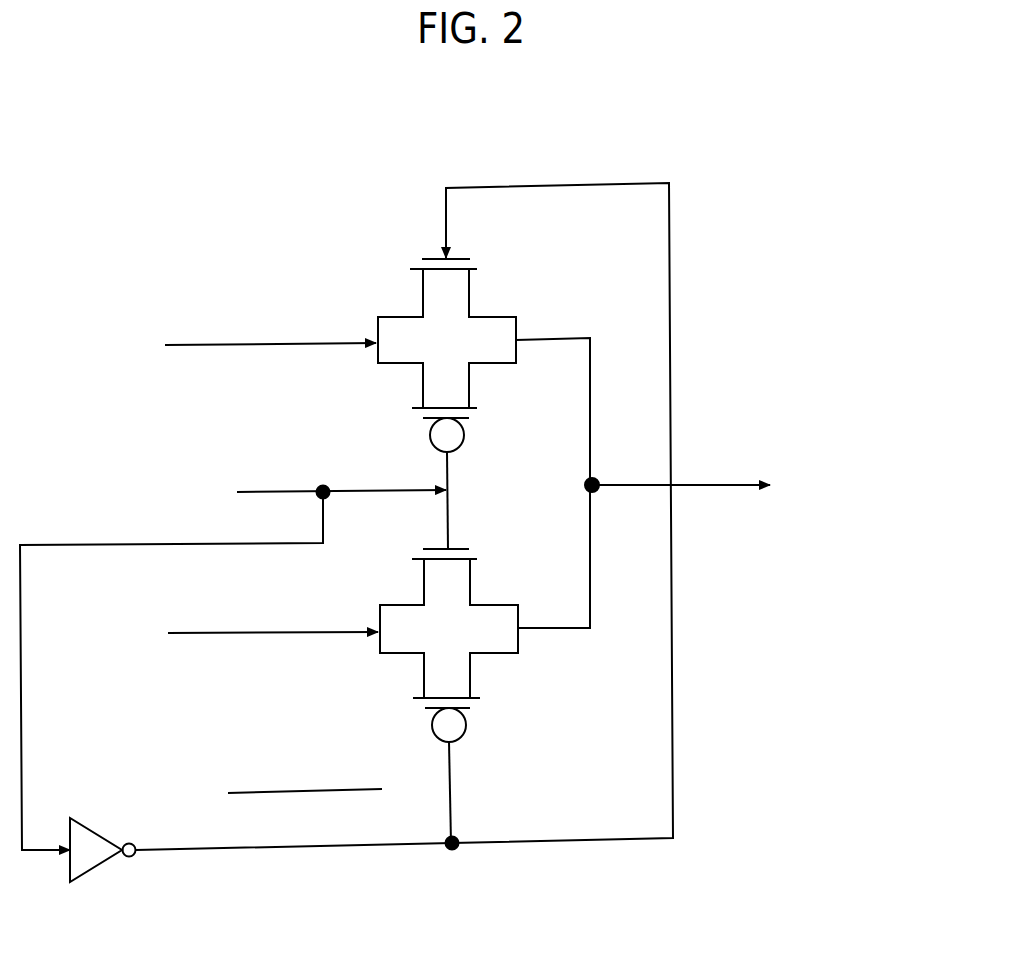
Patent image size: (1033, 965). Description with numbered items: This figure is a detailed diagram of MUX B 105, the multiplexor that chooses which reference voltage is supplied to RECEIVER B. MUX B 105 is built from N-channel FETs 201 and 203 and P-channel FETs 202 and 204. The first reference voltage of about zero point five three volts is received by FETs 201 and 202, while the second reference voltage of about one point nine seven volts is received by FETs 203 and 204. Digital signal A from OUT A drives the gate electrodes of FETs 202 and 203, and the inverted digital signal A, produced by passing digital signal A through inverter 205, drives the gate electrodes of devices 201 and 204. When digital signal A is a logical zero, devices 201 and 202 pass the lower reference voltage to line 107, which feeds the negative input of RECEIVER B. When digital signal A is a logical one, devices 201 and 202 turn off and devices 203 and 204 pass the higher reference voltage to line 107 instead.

The MUX B 105 is at (308, 250).
The line 107 is at (700, 480).
The N-channel FET 201 is at (473, 267).
The P-channel FET 202 is at (477, 408).
The N-channel FET 203 is at (473, 557).
The P-channel FET 204 is at (478, 698).
The inverter 205 is at (92, 872).